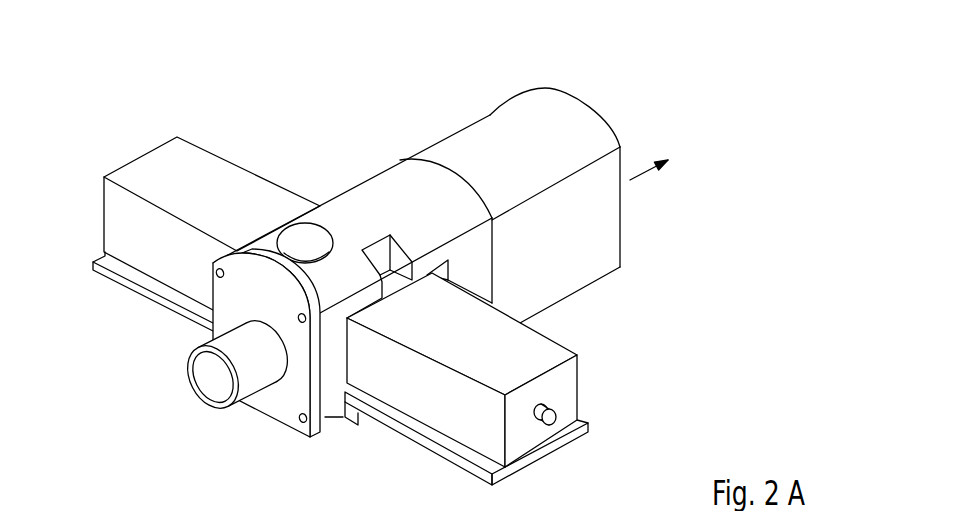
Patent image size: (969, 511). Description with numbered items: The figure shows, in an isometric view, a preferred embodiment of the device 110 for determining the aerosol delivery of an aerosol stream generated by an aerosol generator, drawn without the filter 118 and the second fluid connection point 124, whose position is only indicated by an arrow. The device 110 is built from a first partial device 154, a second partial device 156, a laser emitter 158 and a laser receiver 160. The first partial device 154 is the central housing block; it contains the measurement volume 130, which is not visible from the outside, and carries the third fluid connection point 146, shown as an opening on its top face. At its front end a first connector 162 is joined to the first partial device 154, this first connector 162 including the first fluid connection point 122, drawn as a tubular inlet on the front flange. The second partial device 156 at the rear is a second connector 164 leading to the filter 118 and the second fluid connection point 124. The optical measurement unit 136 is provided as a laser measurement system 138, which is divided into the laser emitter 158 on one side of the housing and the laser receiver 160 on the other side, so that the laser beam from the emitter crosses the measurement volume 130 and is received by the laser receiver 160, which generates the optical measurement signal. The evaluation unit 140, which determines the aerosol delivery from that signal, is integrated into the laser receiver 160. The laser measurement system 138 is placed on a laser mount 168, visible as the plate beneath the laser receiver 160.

The device 110 is at (790, 137).
The filter 118 is at (691, 155).
The first fluid connection point 122 is at (192, 388).
The second fluid connection point 124 is at (752, 158).
The measurement volume 130 is at (357, 183).
The optical measurement unit 136 is at (421, 277).
The laser measurement system 138 is at (421, 277).
The evaluation unit 140 is at (583, 370).
The third fluid connection point 146 is at (292, 240).
The first partial device 154 is at (303, 302).
The second partial device 156 is at (475, 187).
The laser emitter 158 is at (152, 163).
The laser receiver 160 is at (570, 377).
The first connector 162 is at (273, 419).
The second connector 164 is at (450, 135).
The laser mount 168 is at (442, 455).